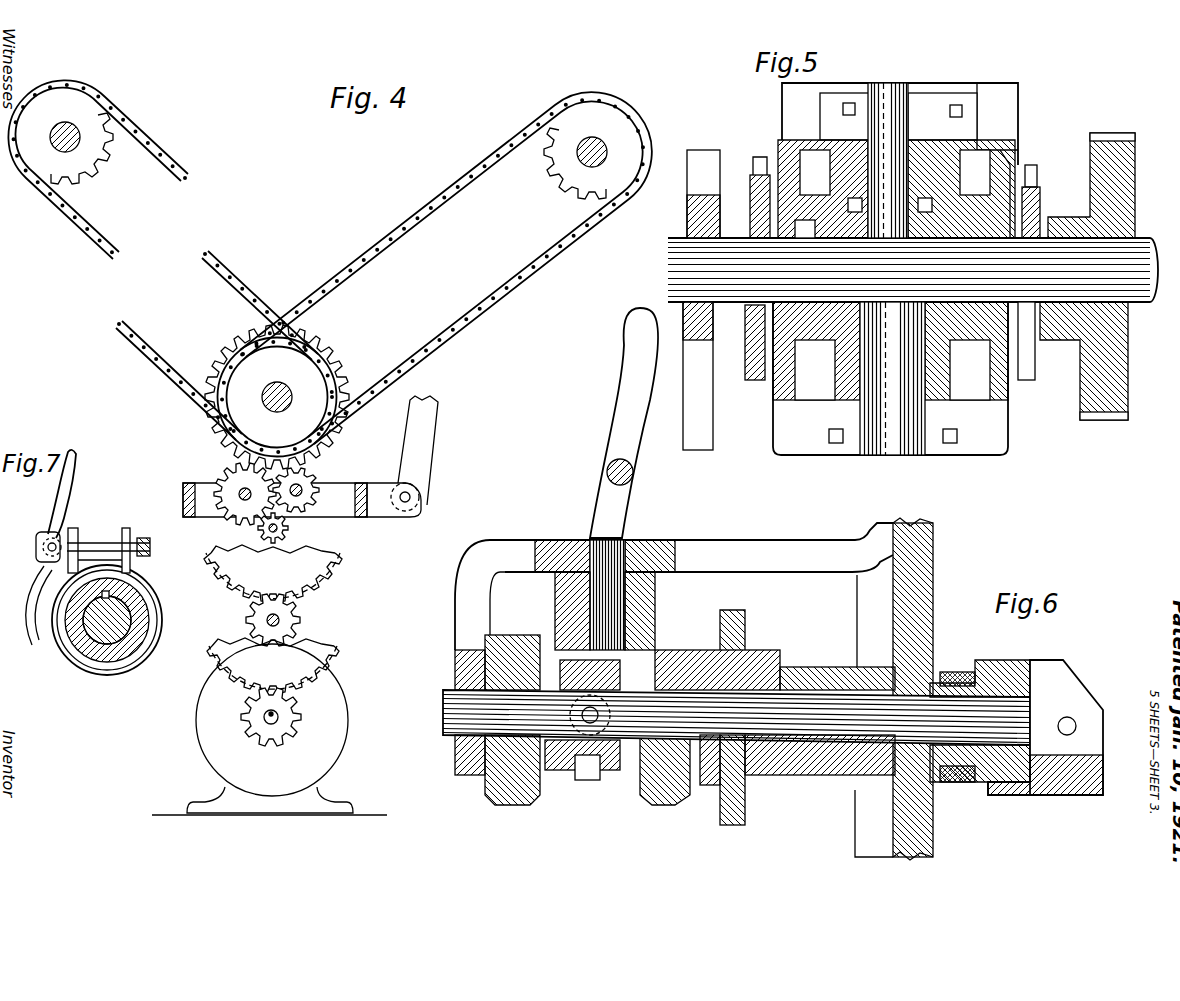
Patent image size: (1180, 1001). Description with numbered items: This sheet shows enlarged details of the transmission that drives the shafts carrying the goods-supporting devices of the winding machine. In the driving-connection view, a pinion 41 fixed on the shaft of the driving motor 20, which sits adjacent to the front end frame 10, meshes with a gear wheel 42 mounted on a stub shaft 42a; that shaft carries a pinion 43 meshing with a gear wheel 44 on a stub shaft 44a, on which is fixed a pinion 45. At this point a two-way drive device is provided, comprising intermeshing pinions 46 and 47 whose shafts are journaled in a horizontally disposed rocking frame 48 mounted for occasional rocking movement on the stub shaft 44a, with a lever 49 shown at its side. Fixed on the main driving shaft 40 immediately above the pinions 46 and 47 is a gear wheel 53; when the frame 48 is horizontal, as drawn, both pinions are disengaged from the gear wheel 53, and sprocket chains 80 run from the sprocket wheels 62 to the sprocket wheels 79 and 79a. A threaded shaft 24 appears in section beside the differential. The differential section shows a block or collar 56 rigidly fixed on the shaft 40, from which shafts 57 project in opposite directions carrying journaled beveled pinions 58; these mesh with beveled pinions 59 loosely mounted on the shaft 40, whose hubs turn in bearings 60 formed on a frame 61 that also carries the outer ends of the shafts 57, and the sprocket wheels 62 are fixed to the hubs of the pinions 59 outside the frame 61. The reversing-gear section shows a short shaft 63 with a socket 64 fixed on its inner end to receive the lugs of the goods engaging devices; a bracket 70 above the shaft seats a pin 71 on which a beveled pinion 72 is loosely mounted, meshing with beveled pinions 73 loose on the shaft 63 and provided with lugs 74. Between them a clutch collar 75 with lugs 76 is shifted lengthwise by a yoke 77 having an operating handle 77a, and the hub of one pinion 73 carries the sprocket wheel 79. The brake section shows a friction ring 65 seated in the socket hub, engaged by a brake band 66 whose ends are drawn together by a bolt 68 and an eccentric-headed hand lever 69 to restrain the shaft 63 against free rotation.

In FIG. 6, the front end frame 10 is at (920, 565).
In FIG. 4, the driving motor 20 is at (205, 724).
In FIG. 5, the threaded shaft 24 is at (705, 452).
In FIG. 4, the main driving shaft 40 is at (262, 396).
In FIG. 5, the main driving shaft 40 is at (668, 262).
In FIG. 4, the pinion 41 is at (293, 718).
In FIG. 4, the gear wheel 42 is at (338, 656).
In FIG. 4, the stub shaft 42a is at (206, 648).
In FIG. 4, the pinion 43 is at (300, 620).
In FIG. 4, the gear wheel 44 is at (343, 572).
In FIG. 4, the stub shaft 44a is at (350, 533).
In FIG. 4, the pinion 45 is at (232, 528).
In FIG. 4, the pinion 46 is at (230, 480).
In FIG. 4, the pinion 47 is at (310, 486).
In FIG. 4, the rocking frame 48 is at (181, 491).
In FIG. 4, the lever 49 is at (425, 423).
In FIG. 4, the gear wheel 53 is at (330, 352).
In FIG. 5, the gear wheel 53 is at (1108, 420).
In FIG. 5, the block or collar 56 is at (1010, 165).
In FIG. 5, the shafts 57 is at (893, 135).
In FIG. 5, the beveled pinions 58 is at (953, 168).
In FIG. 5, the beveled pinions 59 is at (820, 185).
In FIG. 5, the bearings 60 is at (760, 210).
In FIG. 5, the frame 61 is at (1012, 92).
In FIG. 4, the sprocket wheels 62 is at (270, 368).
In FIG. 5, the sprocket wheels 62 is at (753, 185).
In FIG. 4, the shafts 63 is at (72, 135).
In FIG. 7, the shafts 63 is at (120, 602).
In FIG. 6, the shafts 63 is at (798, 705).
In FIG. 6, the sockets 64 is at (1072, 792).
In FIG. 7, the friction rings 65 is at (108, 662).
In FIG. 6, the friction rings 65 is at (955, 785).
In FIG. 7, the brake bands 66 is at (85, 658).
In FIG. 6, the brake bands 66 is at (955, 670).
In FIG. 7, the bolt 68 is at (104, 530).
In FIG. 7, the hand lever 69 is at (54, 512).
In FIG. 6, the brackets 70 is at (727, 546).
In FIG. 6, the pin 71 is at (572, 560).
In FIG. 6, the beveled pinion 72 is at (652, 598).
In FIG. 6, the beveled pinions 73 is at (505, 790).
In FIG. 6, the lugs 74 is at (535, 662).
In FIG. 6, the clutch collar 75 is at (605, 775).
In FIG. 6, the lugs 76 is at (640, 662).
In FIG. 6, the yoke 77 is at (622, 510).
In FIG. 6, the operating handle 77a is at (625, 394).
In FIG. 4, the sprocket wheel 79 is at (578, 125).
In FIG. 6, the sprocket wheel 79 is at (745, 810).
In FIG. 4, the sprocket wheel 79a is at (100, 182).
In FIG. 4, the sprocket chain 80 is at (162, 352).